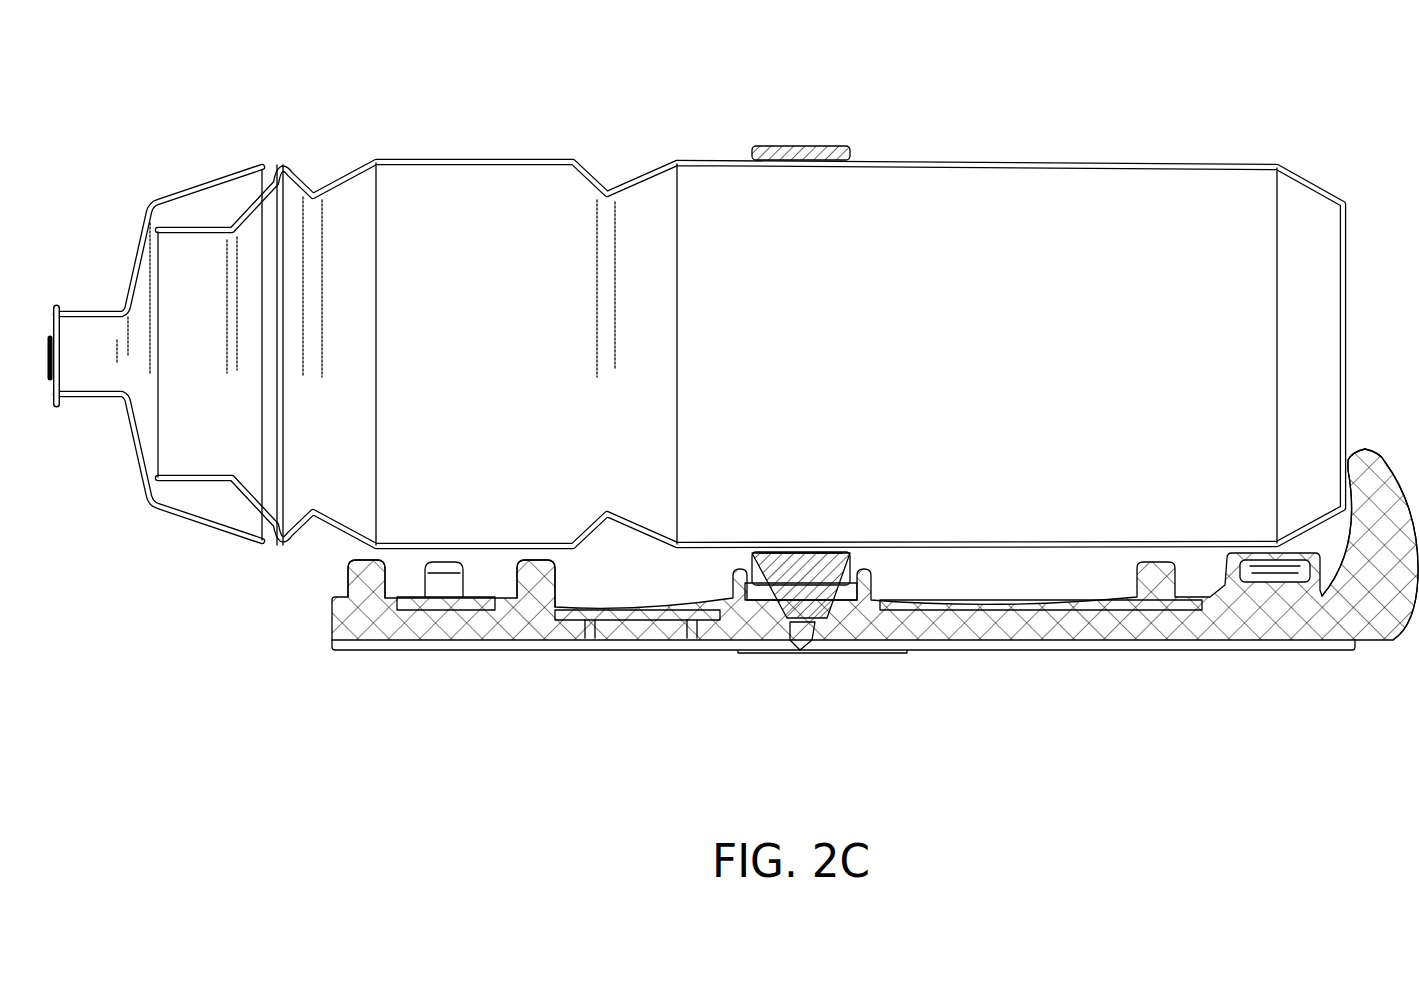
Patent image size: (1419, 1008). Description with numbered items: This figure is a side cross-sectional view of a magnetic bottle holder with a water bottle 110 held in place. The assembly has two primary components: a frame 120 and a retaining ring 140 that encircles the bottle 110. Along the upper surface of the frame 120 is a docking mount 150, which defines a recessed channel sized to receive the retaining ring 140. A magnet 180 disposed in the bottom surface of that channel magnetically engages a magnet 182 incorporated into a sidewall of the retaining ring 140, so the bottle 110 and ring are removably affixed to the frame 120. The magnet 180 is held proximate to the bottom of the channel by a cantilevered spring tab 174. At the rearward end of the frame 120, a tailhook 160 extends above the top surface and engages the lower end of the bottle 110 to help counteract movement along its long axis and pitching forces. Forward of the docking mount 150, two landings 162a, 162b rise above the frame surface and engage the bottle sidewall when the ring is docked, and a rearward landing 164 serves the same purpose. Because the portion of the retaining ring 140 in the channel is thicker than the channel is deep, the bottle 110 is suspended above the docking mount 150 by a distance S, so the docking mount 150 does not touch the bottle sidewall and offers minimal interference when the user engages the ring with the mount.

The water bottle 110 is at (1060, 166).
The frame 120 is at (1178, 650).
The retaining ring 140 is at (818, 158).
The docking mount 150 is at (884, 586).
The tailhook 160 is at (1370, 457).
The landing 162a is at (370, 568).
The landing 162b is at (528, 568).
The landing 164 is at (1280, 573).
The cantilevered spring tab 174 is at (810, 632).
The magnet 180 is at (815, 600).
The magnet 182 is at (780, 567).
The distance S is at (718, 564).